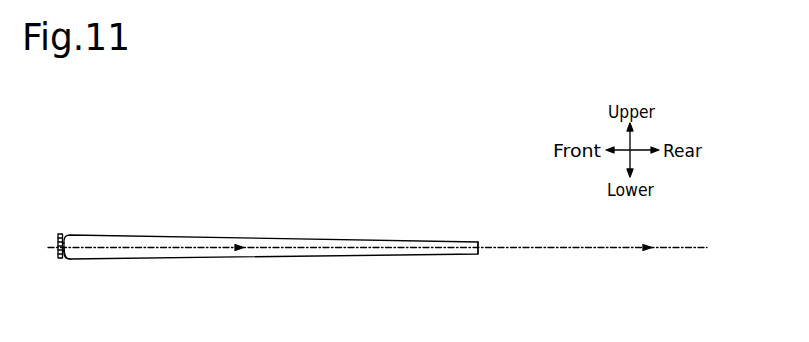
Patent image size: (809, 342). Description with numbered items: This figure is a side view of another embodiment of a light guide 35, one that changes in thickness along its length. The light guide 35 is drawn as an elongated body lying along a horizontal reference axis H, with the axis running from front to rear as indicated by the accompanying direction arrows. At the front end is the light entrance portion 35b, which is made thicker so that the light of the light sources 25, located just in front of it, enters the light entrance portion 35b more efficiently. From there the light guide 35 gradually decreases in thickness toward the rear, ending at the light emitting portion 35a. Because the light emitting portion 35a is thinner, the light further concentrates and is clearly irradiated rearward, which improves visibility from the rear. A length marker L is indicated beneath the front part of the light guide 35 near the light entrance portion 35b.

The light source 25 is at (67, 236).
The light guide 35 is at (272, 237).
The light emitting portion 35a is at (483, 256).
The light entrance portion 35b is at (66, 259).
The length of arm member L is at (151, 258).
The horizontal axis H is at (387, 249).